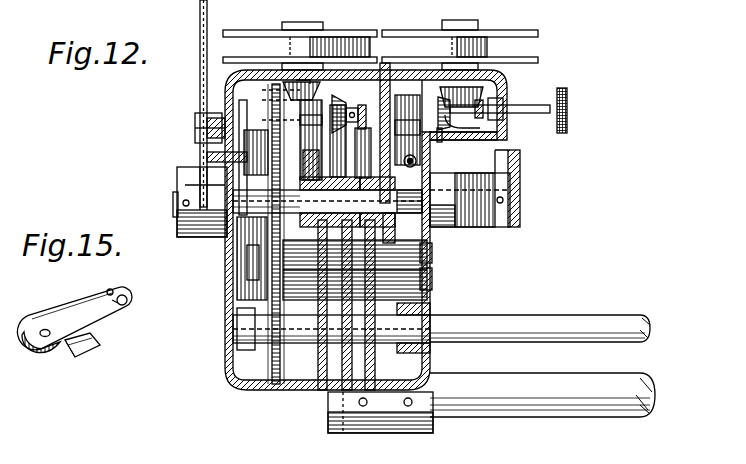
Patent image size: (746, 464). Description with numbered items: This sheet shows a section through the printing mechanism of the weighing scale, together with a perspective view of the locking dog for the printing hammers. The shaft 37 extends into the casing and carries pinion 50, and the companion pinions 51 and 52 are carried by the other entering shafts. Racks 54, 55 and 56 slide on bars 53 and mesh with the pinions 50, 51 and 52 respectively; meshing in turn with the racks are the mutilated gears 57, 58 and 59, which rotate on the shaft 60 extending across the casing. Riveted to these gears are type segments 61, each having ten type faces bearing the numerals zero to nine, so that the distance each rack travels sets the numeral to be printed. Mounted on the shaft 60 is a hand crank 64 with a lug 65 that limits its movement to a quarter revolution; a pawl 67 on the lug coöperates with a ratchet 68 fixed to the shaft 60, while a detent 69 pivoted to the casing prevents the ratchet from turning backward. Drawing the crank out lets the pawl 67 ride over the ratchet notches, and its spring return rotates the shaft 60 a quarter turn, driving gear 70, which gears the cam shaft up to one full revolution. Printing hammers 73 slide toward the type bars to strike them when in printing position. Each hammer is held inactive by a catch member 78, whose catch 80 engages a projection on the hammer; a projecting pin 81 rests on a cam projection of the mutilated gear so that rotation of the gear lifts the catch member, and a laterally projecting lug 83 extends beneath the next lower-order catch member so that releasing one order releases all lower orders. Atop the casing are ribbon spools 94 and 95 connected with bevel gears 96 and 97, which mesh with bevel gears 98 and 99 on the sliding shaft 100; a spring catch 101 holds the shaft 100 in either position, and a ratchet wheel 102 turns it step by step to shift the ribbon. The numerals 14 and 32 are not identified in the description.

In FIG. 12, the casing 14 is at (226, 97).
In FIG. 12, the shaft 32 is at (466, 384).
In FIG. 12, the shaft 37 is at (466, 326).
In FIG. 12, the pinion 50 is at (372, 358).
In FIG. 12, the pinion 51 is at (346, 360).
In FIG. 12, the pinion 52 is at (318, 355).
In FIG. 12, the bars 53 is at (432, 280).
In FIG. 12, the rack 54 is at (432, 253).
In FIG. 12, the rack 55 is at (385, 260).
In FIG. 12, the rack 56 is at (318, 296).
In FIG. 12, the mutilated gear 57 is at (390, 236).
In FIG. 12, the mutilated gear 58 is at (430, 190).
In FIG. 12, the mutilated gear 59 is at (270, 247).
In FIG. 12, the shaft 60 is at (432, 190).
In FIG. 12, the type segment 61 is at (360, 112).
In FIG. 12, the hand crank 64 is at (200, 20).
In FIG. 12, the lug 65 is at (200, 130).
In FIG. 12, the pawl 67 is at (240, 159).
In FIG. 12, the ratchet 68 is at (236, 210).
In FIG. 12, the detent 69 is at (512, 193).
In FIG. 12, the gear 70 is at (305, 166).
In FIG. 12, the printing hammer 73 is at (327, 202).
In FIG. 15, the catch member 78 is at (90, 306).
In FIG. 15, the catch 80 is at (126, 304).
In FIG. 15, the projecting pin 81 is at (110, 290).
In FIG. 15, the laterally projecting lug 83 is at (92, 358).
In FIG. 12, the ribbon spool 94 is at (332, 34).
In FIG. 12, the ribbon spool 95 is at (512, 20).
In FIG. 12, the bevel gear 96 is at (288, 88).
In FIG. 12, the bevel gear 97 is at (492, 80).
In FIG. 12, the bevel gear 98 is at (352, 108).
In FIG. 12, the bevel gear 99 is at (456, 137).
In FIG. 12, the shaft 100 is at (523, 110).
In FIG. 12, the spring catch 101 is at (480, 128).
In FIG. 12, the ratchet wheel 102 is at (392, 75).